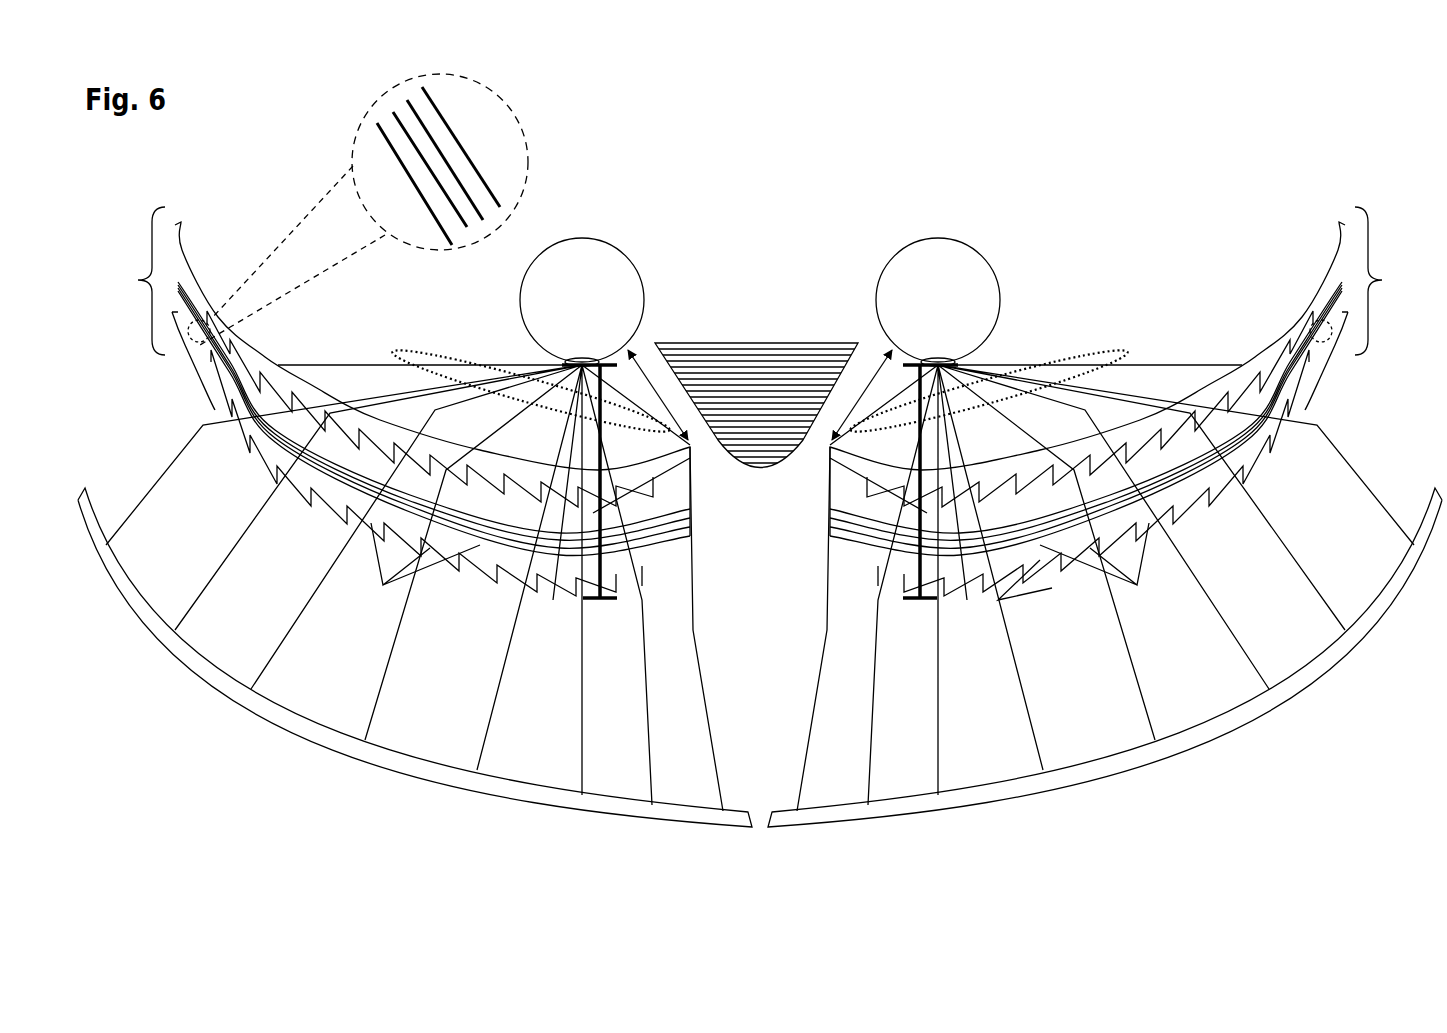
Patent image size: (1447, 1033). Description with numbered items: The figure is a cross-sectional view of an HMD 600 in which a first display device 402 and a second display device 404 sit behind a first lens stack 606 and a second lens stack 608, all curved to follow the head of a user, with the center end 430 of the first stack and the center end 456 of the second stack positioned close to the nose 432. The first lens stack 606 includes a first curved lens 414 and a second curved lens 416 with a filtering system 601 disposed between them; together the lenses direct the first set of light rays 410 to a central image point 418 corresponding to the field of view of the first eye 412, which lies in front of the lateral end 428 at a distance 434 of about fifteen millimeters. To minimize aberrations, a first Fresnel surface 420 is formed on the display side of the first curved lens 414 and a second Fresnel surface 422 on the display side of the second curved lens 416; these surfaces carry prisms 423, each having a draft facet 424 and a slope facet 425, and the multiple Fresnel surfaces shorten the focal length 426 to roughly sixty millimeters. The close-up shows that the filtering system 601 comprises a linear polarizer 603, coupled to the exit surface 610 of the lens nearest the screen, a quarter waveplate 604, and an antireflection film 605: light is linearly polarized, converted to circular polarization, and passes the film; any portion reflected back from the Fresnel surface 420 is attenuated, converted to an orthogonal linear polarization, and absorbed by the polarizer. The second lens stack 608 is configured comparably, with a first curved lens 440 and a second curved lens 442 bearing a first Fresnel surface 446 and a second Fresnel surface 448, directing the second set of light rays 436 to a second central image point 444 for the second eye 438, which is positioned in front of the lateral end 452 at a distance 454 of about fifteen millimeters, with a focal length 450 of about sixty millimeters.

The HMD 600 is at (185, 805).
The first display device 402 is at (238, 693).
The second display device 404 is at (1282, 693).
The first set of light rays 410 is at (468, 355).
The first eye 412 is at (582, 300).
The first curved lens 414 is at (290, 340).
The second curved lens 416 is at (308, 512).
The central image point 418 is at (580, 355).
The first Fresnel surface 420 is at (178, 258).
The second Fresnel surface 422 is at (190, 383).
The prisms 423 is at (383, 586).
The draft facet 424 is at (1000, 600).
The slope facet 425 is at (1145, 594).
The focal length 426 is at (597, 535).
The lateral end 428 is at (180, 186).
The center end 430 is at (698, 500).
The nose 432 is at (765, 345).
The distance 434 is at (645, 342).
The second set of light rays 436 is at (1092, 352).
The second eye 438 is at (938, 300).
The first curved lens 440 is at (1270, 298).
The second curved lens 442 is at (1208, 512).
The second central image point 444 is at (940, 355).
The first Fresnel surface 446 is at (1342, 258).
The second Fresnel surface 448 is at (1330, 383).
The focal length 450 is at (923, 545).
The lateral end 452 is at (1340, 186).
The distance 454 is at (875, 342).
The center end 456 is at (825, 505).
The filtering system 601 is at (213, 337).
The linear polarizer 603 is at (468, 228).
The quarter waveplate 604 is at (415, 116).
The antireflection film 605 is at (493, 190).
The first lens stack 606 is at (121, 281).
The second lens stack 608 is at (1395, 281).
The exit surface 610 is at (287, 447).